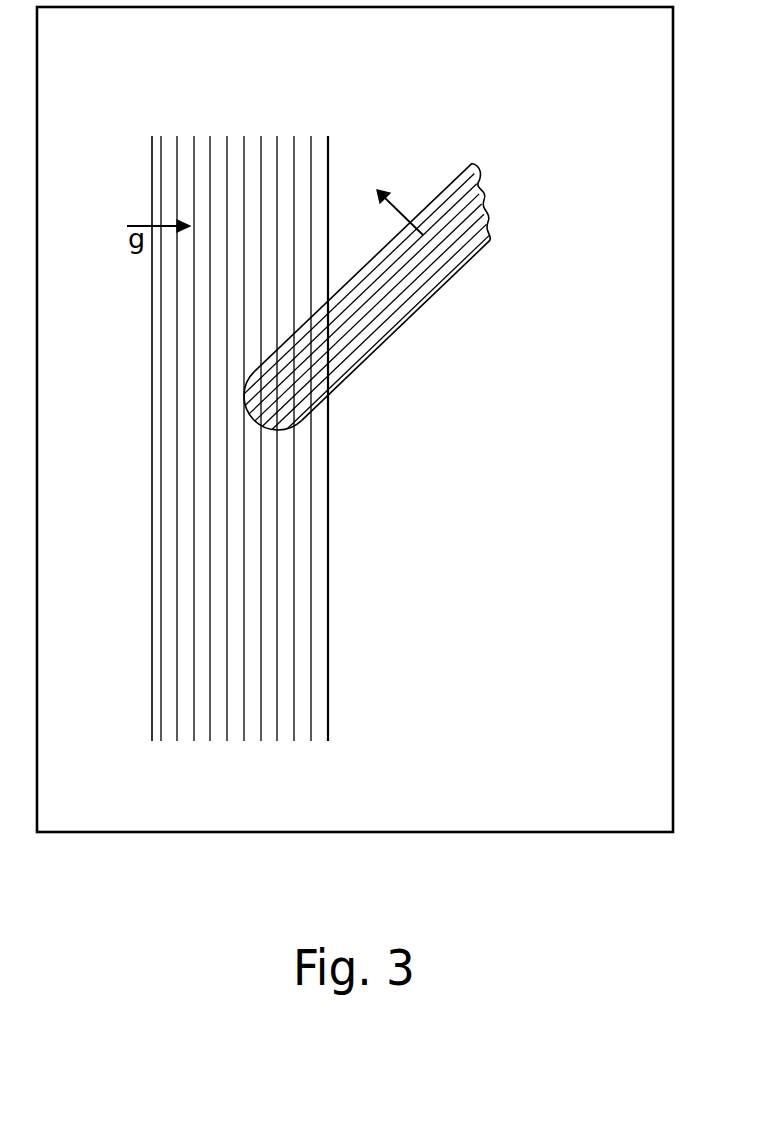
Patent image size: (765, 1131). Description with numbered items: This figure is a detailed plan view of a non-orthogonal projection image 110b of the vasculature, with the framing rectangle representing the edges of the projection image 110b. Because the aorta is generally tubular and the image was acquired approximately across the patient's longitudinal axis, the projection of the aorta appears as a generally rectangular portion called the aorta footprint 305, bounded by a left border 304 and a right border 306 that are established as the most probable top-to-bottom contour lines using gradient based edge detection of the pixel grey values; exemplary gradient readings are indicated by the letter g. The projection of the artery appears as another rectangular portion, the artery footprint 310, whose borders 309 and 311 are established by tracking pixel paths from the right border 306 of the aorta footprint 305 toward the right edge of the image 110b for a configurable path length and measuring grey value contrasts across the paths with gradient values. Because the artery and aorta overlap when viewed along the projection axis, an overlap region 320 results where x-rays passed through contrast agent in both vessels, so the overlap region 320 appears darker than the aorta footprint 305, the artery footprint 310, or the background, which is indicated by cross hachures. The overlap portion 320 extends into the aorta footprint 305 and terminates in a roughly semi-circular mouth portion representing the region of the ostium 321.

The non-orthogonal projection image 110b is at (597, 820).
The border of aorta footprint 304 is at (150, 538).
The aorta footprint 305 is at (282, 645).
The right border of aorta footprint 306 is at (328, 562).
The border of artery footprint 309 is at (472, 163).
The artery footprint 310 is at (470, 213).
The border of artery footprint 311 is at (393, 328).
The overlap region 320 is at (337, 257).
The ostium region 321 is at (260, 380).